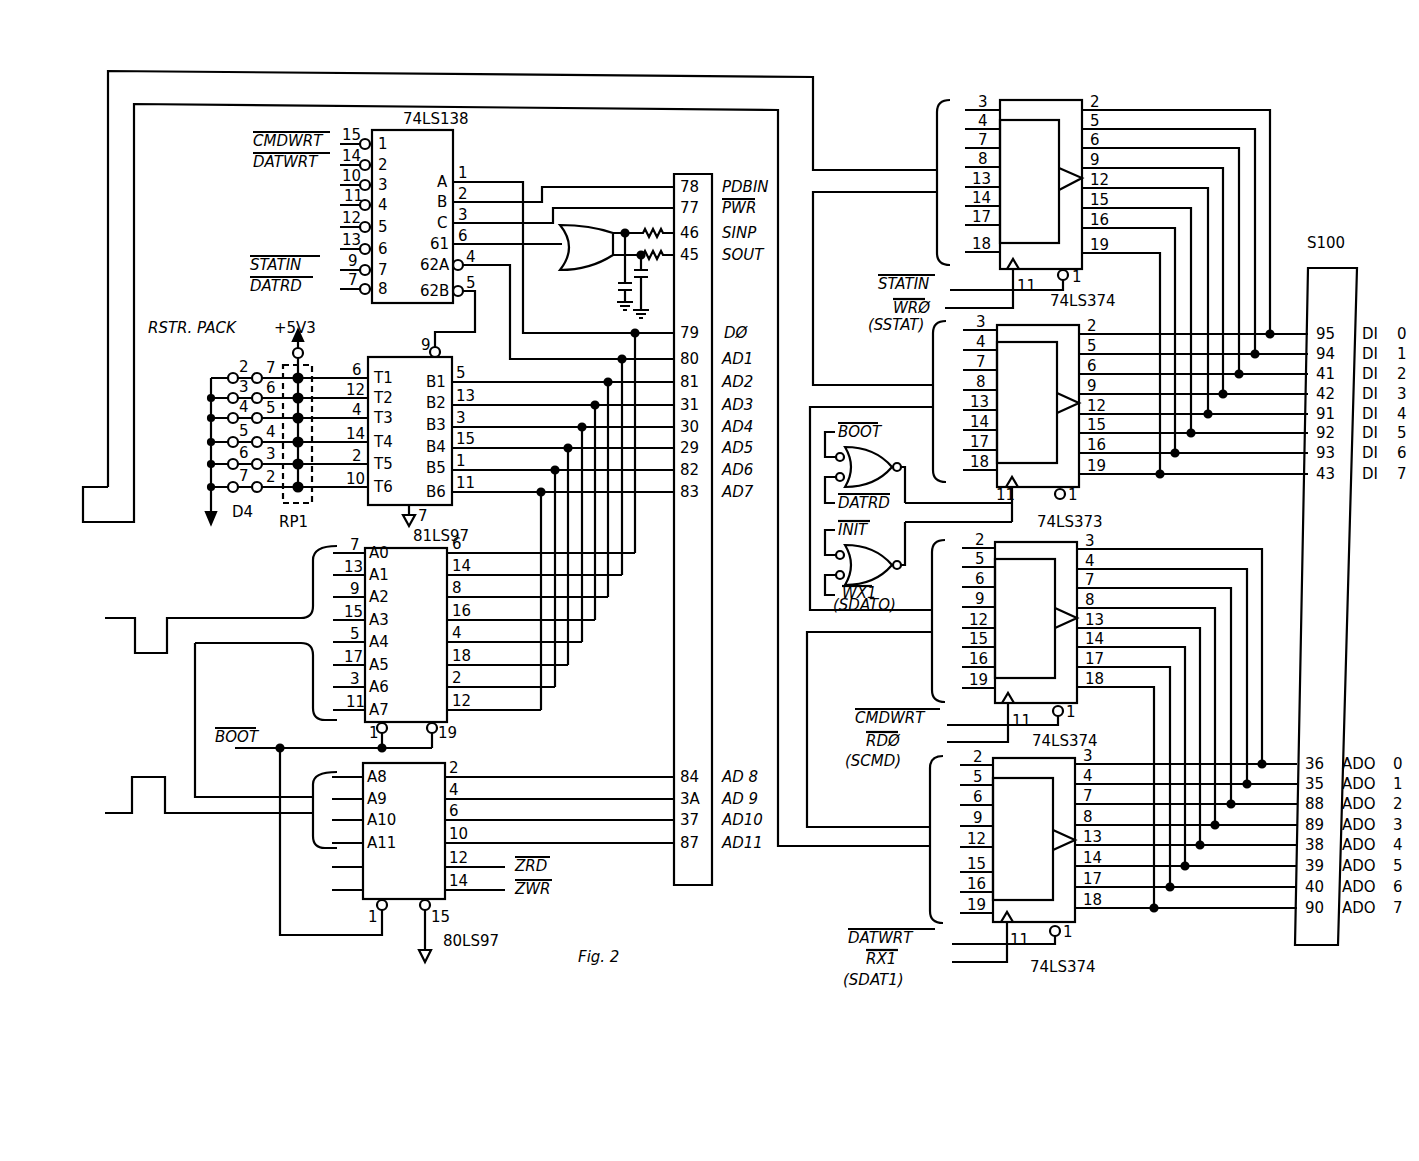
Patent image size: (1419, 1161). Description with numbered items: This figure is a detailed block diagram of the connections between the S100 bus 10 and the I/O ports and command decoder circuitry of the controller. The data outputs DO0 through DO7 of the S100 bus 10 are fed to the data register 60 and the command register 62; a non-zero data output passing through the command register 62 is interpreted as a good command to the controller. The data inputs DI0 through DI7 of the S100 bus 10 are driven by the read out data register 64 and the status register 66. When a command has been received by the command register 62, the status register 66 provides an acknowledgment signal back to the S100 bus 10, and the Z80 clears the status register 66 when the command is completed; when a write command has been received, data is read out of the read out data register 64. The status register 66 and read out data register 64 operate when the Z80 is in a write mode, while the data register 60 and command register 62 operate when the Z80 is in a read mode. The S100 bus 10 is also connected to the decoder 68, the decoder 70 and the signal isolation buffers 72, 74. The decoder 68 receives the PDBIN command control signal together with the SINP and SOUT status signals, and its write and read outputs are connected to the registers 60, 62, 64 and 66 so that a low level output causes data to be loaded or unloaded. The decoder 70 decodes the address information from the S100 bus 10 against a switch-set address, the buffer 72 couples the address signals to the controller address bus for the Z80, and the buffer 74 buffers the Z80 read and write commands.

The S100 bus 10 is at (1015, 559).
The data register 60 is at (1034, 840).
The command register 62 is at (1036, 622).
The read out data register 64 is at (1038, 406).
The status register 66 is at (1041, 184).
The decoder 68 is at (412, 216).
The decoder 70 is at (410, 431).
The signal isolation buffer 72 is at (406, 635).
The signal isolation buffer 74 is at (404, 831).